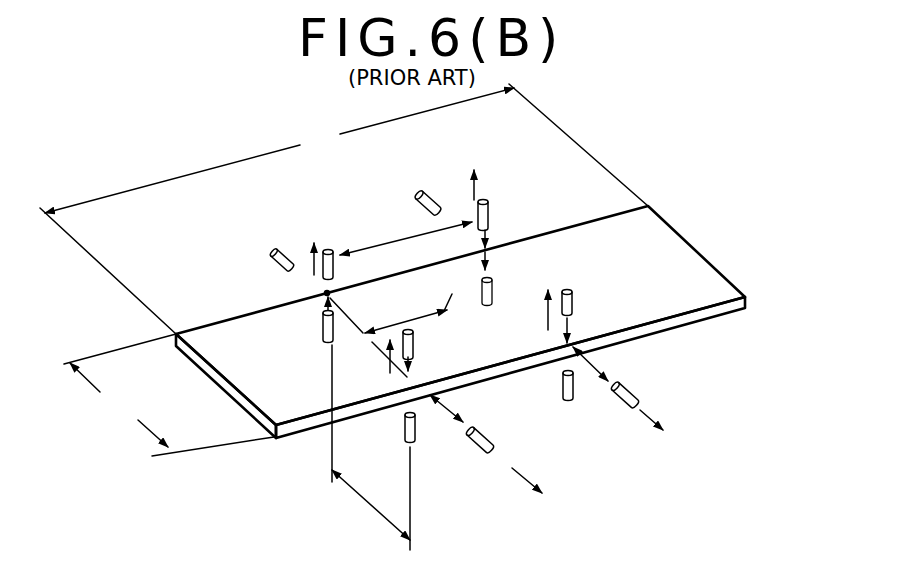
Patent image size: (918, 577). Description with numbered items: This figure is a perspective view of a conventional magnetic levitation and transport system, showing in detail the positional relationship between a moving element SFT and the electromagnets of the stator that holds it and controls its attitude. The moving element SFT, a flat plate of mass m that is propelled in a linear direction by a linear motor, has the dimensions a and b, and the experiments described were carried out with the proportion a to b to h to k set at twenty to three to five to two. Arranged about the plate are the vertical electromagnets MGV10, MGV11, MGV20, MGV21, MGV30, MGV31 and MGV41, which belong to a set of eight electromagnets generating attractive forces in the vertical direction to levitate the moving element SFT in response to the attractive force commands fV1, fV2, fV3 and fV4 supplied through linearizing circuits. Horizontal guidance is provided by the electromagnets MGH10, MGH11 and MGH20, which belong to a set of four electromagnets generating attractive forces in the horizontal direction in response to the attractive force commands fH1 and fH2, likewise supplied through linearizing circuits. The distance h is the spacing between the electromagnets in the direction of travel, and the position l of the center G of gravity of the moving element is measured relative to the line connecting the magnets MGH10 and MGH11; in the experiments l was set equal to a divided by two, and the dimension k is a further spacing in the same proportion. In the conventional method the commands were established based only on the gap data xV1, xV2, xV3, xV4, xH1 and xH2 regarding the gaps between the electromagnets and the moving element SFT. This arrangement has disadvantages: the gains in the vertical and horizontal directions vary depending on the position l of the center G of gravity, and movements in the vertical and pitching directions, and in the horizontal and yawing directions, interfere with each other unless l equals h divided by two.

The moving element SFT is at (687, 243).
The electromagnet MGV10 is at (324, 268).
The electromagnet MGV11 is at (323, 322).
The electromagnet MGH11 is at (272, 257).
The electromagnet MGV20 is at (414, 338).
The electromagnet MGV21 is at (405, 426).
The electromagnet MGV30 is at (489, 208).
The electromagnet MGV31 is at (493, 281).
The electromagnet MGV41 is at (568, 401).
The electromagnet MGH10 is at (470, 448).
The electromagnet MGH20 is at (636, 392).
The center of gravity G is at (452, 290).
The dimension a is at (344, 209).
The dimension b is at (169, 395).
The distance between electromagnets h is at (406, 234).
The position of center of gravity l is at (406, 317).
The dimension k is at (371, 447).
The attractive force command fV1 is at (314, 240).
The attractive force command fV2 is at (389, 370).
The attractive force command fV3 is at (476, 169).
The attractive force command fV4 is at (547, 309).
The attractive force command fH1 is at (545, 496).
The attractive force command fH2 is at (669, 433).
The gap data xV1 is at (322, 292).
The gap data xV2 is at (411, 368).
The gap data xV3 is at (488, 250).
The gap data xV4 is at (571, 324).
The gap data xH1 is at (448, 406).
The gap data xH2 is at (598, 366).